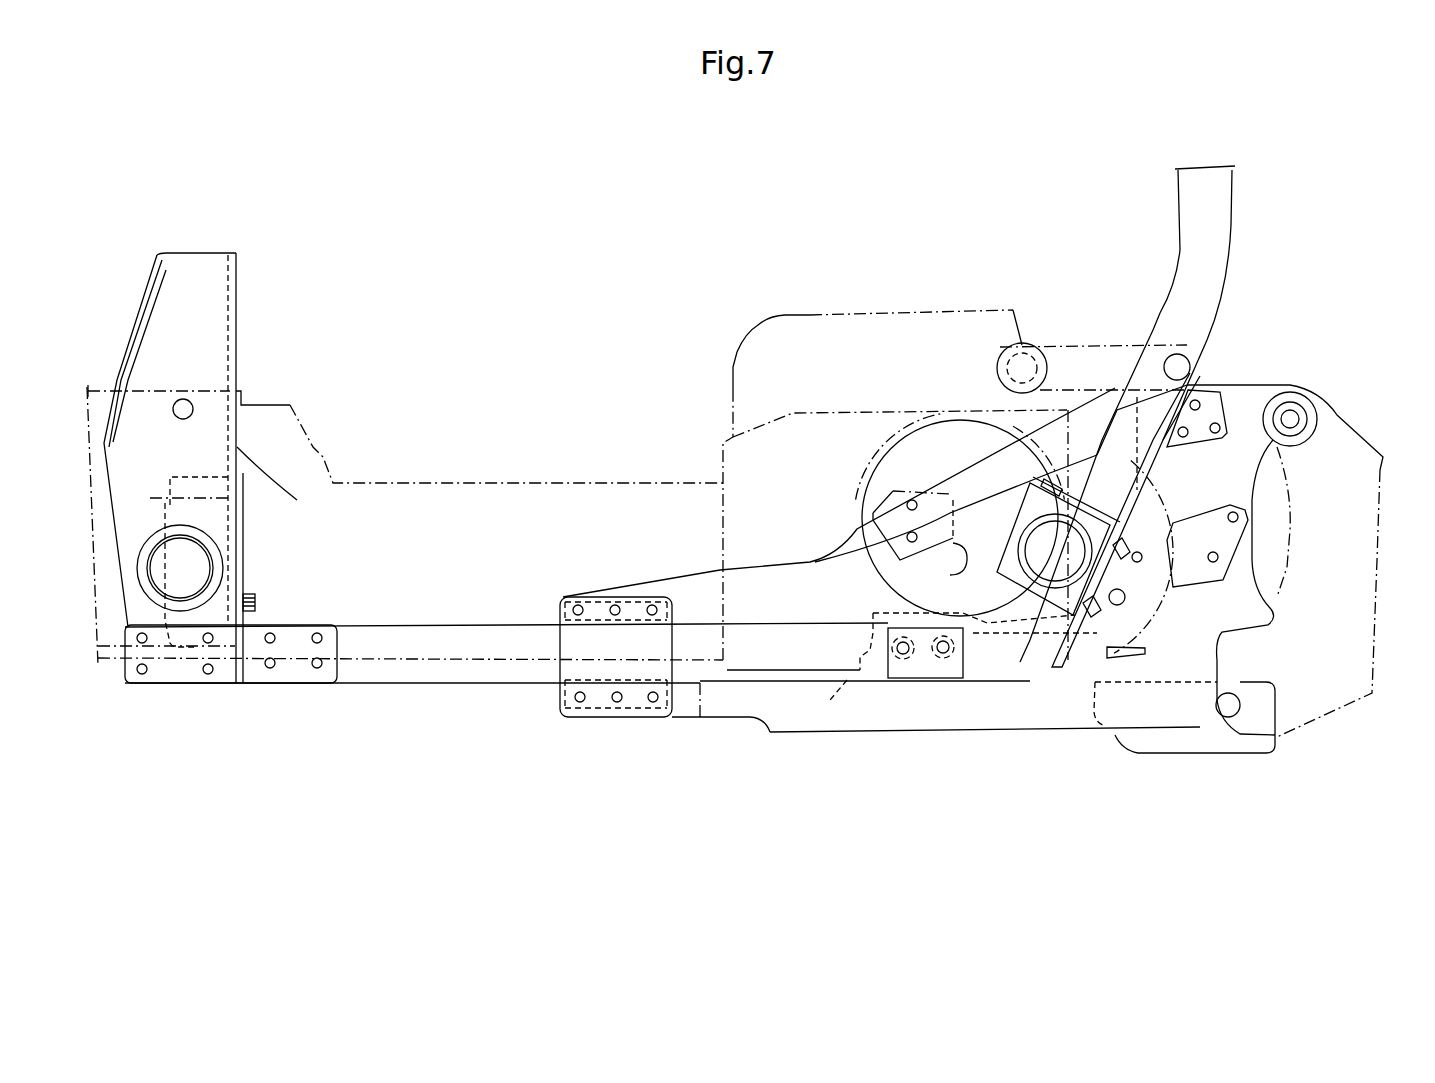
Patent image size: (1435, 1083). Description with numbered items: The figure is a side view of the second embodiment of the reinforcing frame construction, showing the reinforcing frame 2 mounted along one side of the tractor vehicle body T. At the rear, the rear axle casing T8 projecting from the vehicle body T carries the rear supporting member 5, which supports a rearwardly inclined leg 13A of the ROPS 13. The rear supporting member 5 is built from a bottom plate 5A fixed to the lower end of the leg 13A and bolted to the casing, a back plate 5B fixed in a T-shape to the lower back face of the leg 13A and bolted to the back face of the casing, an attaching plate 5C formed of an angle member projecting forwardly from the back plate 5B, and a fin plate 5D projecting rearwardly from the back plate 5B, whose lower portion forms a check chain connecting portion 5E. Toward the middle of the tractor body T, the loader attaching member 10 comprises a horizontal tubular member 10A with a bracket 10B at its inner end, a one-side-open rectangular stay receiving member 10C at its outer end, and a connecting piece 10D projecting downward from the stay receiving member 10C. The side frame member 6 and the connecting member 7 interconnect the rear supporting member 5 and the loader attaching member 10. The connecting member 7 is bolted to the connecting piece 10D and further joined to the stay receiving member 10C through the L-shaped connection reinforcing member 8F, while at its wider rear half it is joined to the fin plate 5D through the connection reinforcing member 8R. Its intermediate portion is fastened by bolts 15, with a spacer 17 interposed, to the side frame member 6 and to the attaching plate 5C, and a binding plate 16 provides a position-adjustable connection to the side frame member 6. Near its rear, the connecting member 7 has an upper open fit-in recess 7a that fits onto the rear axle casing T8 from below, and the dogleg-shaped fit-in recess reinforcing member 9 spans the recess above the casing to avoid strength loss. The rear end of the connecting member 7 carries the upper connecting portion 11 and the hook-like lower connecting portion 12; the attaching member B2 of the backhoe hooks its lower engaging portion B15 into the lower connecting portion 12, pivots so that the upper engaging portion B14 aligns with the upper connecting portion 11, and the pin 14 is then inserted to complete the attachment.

The reinforcing frame 2 is at (610, 737).
The rear supporting member 5 is at (1232, 827).
The bottom plate 5A is at (1063, 385).
The back plate 5B is at (1073, 620).
The attaching plate 5C is at (982, 663).
The fin plate 5D is at (1103, 657).
The check chain connecting portion 5E is at (1147, 654).
The side frame member 6 is at (467, 673).
The connecting member 7 is at (740, 705).
The fit-in recess 7a is at (950, 575).
The connection reinforcing member 8F is at (293, 675).
The connection reinforcing member 8R is at (1207, 541).
The fit-in recess reinforcing member 9 is at (973, 463).
The loader attaching member 10 is at (367, 493).
The tubular member 10A is at (218, 570).
The bracket 10B is at (243, 528).
The stay receiving member 10C is at (297, 500).
The connecting piece 10D is at (210, 655).
The upper connecting portion 11 is at (1258, 388).
The lower connecting portion 12 is at (1250, 740).
The ROPS 13 is at (1233, 212).
The leg 13A is at (1213, 273).
The pin 14 is at (1293, 427).
The bolts 15 is at (943, 660).
The binding plate 16 is at (627, 597).
The spacer 17 is at (880, 663).
The tractor vehicle body T is at (475, 440).
The rear axle casing T8 is at (1060, 518).
The upper engaging portion B14 is at (1333, 417).
The attaching member B2 is at (1373, 443).
The lower engaging portion B15 is at (1230, 700).